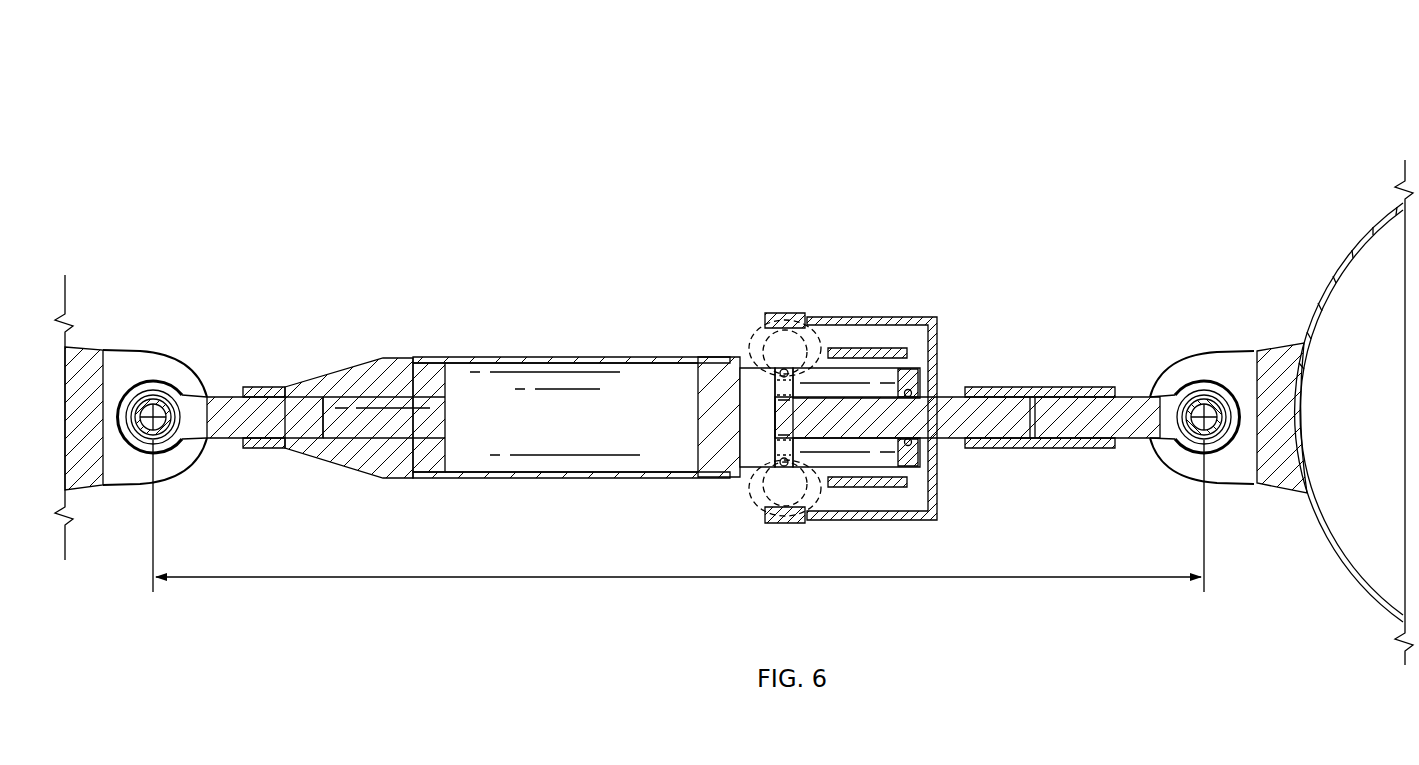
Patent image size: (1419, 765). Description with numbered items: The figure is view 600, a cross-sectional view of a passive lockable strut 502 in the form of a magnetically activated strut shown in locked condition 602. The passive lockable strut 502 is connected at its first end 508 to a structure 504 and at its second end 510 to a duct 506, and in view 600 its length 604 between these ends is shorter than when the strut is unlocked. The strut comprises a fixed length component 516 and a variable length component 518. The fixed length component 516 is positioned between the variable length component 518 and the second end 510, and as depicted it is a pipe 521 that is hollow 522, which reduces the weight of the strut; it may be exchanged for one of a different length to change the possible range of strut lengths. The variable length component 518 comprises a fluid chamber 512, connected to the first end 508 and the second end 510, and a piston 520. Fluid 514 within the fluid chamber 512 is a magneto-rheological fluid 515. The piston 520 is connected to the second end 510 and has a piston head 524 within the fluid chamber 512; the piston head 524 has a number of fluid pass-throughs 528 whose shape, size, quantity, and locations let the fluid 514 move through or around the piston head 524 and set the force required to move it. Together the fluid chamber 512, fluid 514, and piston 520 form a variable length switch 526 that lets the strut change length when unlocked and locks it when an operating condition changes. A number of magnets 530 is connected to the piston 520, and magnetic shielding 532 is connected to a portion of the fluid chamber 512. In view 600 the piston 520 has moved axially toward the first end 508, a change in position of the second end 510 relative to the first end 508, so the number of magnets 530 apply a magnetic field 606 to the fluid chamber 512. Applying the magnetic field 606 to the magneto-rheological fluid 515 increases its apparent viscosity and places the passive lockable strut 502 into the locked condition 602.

The view 600 is at (946, 125).
The locked condition 602 is at (735, 275).
The length 604 is at (720, 580).
The magnetic field 606 is at (740, 342).
The passive lockable strut 502 is at (600, 320).
The structure 504 is at (100, 347).
The duct 506 is at (1265, 345).
The first end 508 is at (178, 310).
The second end 510 is at (1188, 310).
The fluid chamber 512 is at (763, 428).
The fluid 514 is at (750, 387).
The magneto-rheological fluid 515 is at (858, 449).
The fixed length component 516 is at (498, 357).
The variable length component 518 is at (955, 477).
The piston 520 is at (963, 390).
The pipe 521 is at (562, 355).
The hollow 522 is at (473, 444).
The piston head 524 is at (770, 408).
The variable length switch 526 is at (845, 285).
The number of fluid pass-throughs 528 is at (772, 441).
The number of magnets 530 is at (785, 313).
The magnetic shielding 532 is at (892, 348).